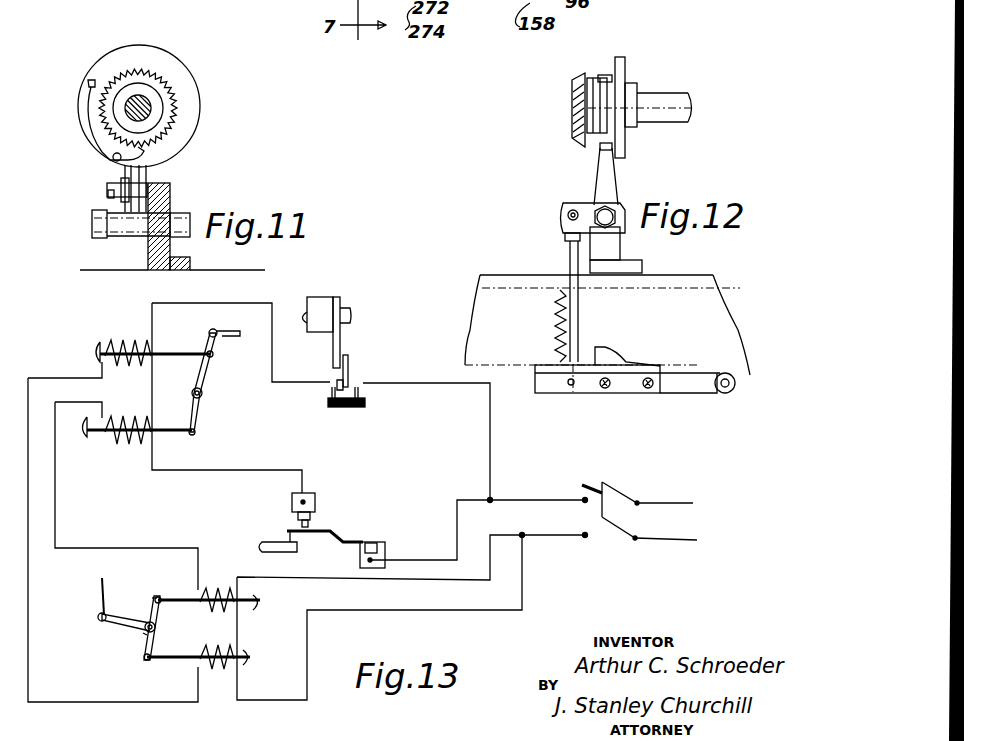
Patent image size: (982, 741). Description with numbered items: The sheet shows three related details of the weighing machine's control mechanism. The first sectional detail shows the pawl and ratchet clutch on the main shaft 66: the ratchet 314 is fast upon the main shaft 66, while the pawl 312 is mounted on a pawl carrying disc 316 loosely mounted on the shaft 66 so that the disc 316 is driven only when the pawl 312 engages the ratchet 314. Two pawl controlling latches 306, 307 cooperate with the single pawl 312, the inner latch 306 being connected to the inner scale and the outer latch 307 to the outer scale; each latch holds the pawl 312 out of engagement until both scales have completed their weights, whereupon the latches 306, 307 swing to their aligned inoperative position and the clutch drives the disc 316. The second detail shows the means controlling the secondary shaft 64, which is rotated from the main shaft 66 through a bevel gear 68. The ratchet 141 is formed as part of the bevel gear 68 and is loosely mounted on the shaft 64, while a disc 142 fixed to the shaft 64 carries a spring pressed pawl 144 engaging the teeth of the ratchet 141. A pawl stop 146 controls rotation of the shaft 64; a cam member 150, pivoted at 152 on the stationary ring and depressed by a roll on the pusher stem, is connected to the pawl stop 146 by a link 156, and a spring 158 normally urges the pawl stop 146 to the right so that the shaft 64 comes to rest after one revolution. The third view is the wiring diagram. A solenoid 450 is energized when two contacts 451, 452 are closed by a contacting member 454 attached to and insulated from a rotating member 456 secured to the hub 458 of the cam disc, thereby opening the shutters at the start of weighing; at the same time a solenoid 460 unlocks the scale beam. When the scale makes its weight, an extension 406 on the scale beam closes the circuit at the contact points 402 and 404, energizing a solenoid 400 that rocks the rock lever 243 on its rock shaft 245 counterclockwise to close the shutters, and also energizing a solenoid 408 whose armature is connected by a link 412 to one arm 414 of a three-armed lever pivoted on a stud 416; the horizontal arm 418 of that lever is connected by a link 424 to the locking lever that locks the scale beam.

In FIG. 11, the main shaft 66 is at (136, 94).
In FIG. 11, the ratchet 314 is at (115, 74).
In FIG. 11, the pawl carrying disc 316 is at (192, 84).
In FIG. 11, the pawl controlling latch 306 is at (148, 176).
In FIG. 11, the pawl controlling latch 307 is at (110, 184).
In FIG. 11, the pawl 312 is at (108, 166).
In FIG. 12, the bevel gear 68 is at (575, 78).
In FIG. 12, the ratchet 141 is at (603, 77).
In FIG. 12, the disc 142 is at (628, 60).
In FIG. 12, the secondary shaft 64 is at (667, 93).
In FIG. 12, the spring pressed pawl 144 is at (600, 154).
In FIG. 12, the pawl stop 146 is at (592, 187).
In FIG. 12, the link 156 is at (568, 257).
In FIG. 12, the spring 158 is at (557, 332).
In FIG. 12, the cam member 150 is at (610, 357).
In FIG. 12, the pivot 152 is at (720, 388).
In FIG. 13, the solenoid 450 is at (118, 342).
In FIG. 13, the rock lever 243 is at (207, 380).
In FIG. 13, the rock shaft 245 is at (205, 403).
In FIG. 13, the solenoid 400 is at (113, 437).
In FIG. 13, the hub 458 is at (322, 297).
In FIG. 13, the rotating member 456 is at (342, 300).
In FIG. 13, the contacting member 454 is at (348, 355).
In FIG. 13, the contact 452 is at (355, 382).
In FIG. 13, the contact 451 is at (340, 383).
In FIG. 13, the contact point 402 is at (313, 522).
In FIG. 13, the contact point 404 is at (310, 530).
In FIG. 13, the extension 406 is at (275, 552).
In FIG. 13, the solenoid 408 is at (220, 590).
In FIG. 13, the solenoid 460 is at (220, 667).
In FIG. 13, the arm 414 is at (160, 615).
In FIG. 13, the horizontal arm 418 is at (113, 628).
In FIG. 13, the link 424 is at (98, 600).
In FIG. 13, the stud 416 is at (143, 633).
In FIG. 13, the link 412 is at (148, 579).